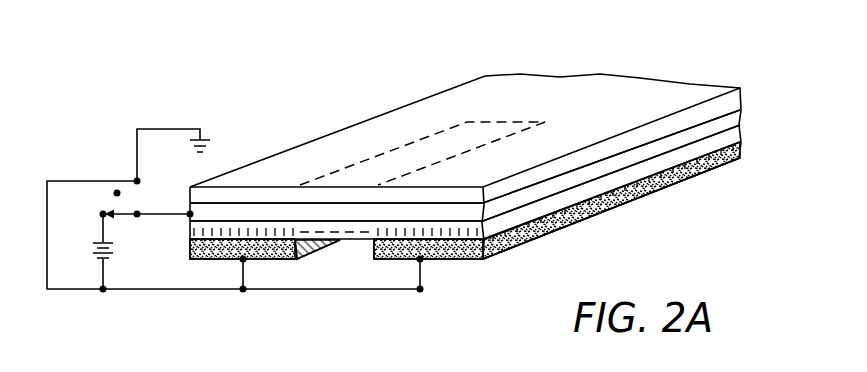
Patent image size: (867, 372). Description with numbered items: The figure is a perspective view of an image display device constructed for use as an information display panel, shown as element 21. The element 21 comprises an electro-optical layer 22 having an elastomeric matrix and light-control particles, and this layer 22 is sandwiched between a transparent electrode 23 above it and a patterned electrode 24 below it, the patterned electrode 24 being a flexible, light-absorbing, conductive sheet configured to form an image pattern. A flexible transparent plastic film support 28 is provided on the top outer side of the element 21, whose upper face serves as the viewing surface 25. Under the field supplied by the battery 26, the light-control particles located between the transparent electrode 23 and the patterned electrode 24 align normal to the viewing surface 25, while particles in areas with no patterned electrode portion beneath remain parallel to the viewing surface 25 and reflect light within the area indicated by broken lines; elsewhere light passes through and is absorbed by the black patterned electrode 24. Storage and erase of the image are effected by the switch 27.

The element 21 is at (624, 66).
The electro-optical layer 22 is at (739, 135).
The transparent electrode 23 is at (739, 115).
The patterned electrode 24 is at (678, 173).
The viewing surface 25 is at (602, 119).
The battery 26 is at (95, 239).
The switch 27 is at (114, 215).
The flexible transparent plastic film support 28 is at (743, 88).